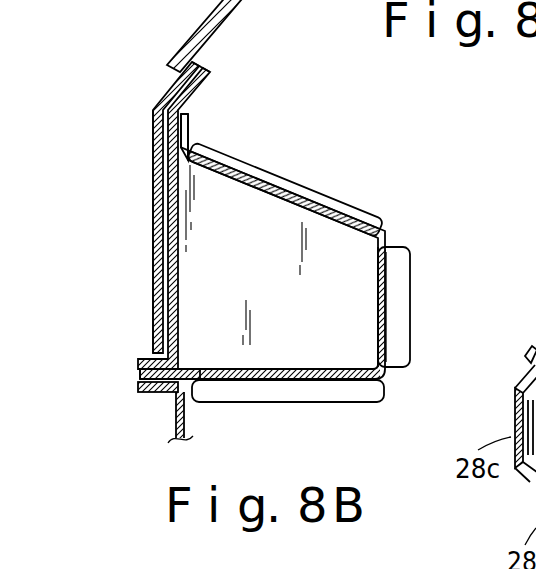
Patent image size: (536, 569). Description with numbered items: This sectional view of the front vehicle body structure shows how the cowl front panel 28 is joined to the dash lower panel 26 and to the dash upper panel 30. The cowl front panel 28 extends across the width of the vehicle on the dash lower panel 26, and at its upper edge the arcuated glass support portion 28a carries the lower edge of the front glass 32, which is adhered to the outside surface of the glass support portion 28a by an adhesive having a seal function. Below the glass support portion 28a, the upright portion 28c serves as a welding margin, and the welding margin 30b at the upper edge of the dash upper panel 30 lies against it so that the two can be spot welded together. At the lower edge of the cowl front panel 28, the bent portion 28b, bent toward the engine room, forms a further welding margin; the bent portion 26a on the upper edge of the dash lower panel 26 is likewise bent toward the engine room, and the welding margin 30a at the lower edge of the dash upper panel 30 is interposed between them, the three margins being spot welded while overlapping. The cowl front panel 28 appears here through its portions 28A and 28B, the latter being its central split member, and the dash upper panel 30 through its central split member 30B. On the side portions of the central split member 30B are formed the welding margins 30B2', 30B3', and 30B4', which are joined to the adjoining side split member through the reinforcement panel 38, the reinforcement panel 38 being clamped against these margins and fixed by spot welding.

The dash lower panel 26 is at (166, 415).
The bent portion 26a is at (154, 392).
The cowl front panel 28 is at (166, 215).
The first holder portion 28A is at (152, 236).
The central split member 28B is at (187, 283).
The glass support portion 28a is at (175, 86).
The bent portion 28b is at (146, 357).
The upright portion 28c is at (153, 142).
The dash upper panel 30 is at (291, 260).
The central split member 30B is at (353, 272).
The welding margin 30a is at (140, 372).
The welding margin 30b is at (188, 132).
The welding margin 30B2' is at (285, 184).
The welding margin 30B3' is at (449, 307).
The welding margin 30B4' is at (341, 396).
The front glass 32 is at (183, 46).
The reinforcement panel 38 is at (363, 272).